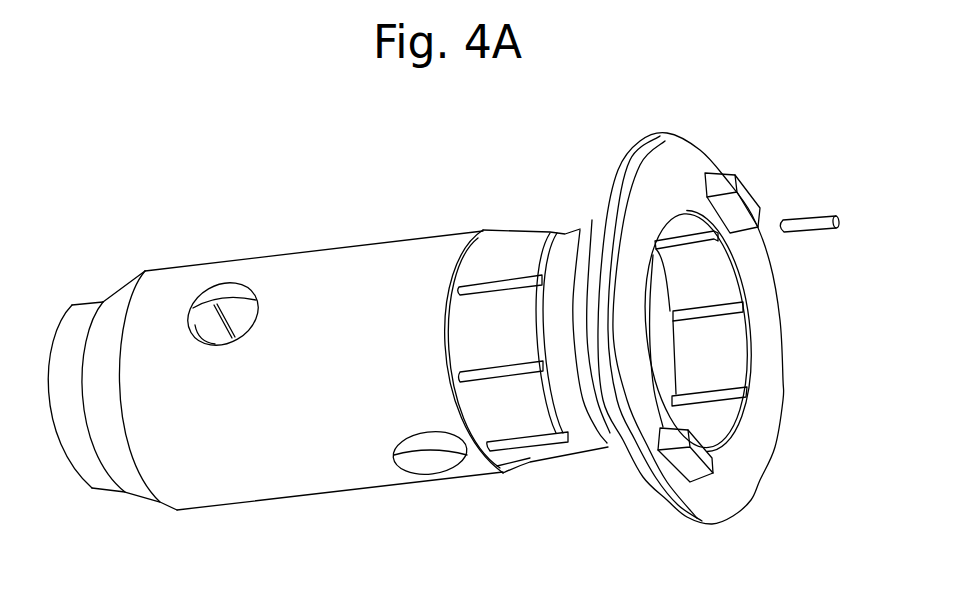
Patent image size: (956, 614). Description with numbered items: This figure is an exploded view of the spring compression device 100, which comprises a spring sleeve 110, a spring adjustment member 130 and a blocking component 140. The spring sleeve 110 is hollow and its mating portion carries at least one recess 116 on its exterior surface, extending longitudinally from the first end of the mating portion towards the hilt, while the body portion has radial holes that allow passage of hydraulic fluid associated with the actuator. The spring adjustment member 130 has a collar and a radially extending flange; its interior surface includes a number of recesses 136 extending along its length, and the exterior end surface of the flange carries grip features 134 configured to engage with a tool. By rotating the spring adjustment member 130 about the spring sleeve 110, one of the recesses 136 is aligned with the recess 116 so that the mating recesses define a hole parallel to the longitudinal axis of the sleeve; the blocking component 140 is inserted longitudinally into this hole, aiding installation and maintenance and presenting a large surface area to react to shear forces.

The spring compression device 100 is at (258, 170).
The spring sleeve 110 is at (177, 265).
The recess 116 is at (515, 280).
The spring adjustment member 130 is at (785, 397).
The grip features 134 is at (698, 476).
The recesses 136 is at (742, 303).
The blocking component 140 is at (813, 212).